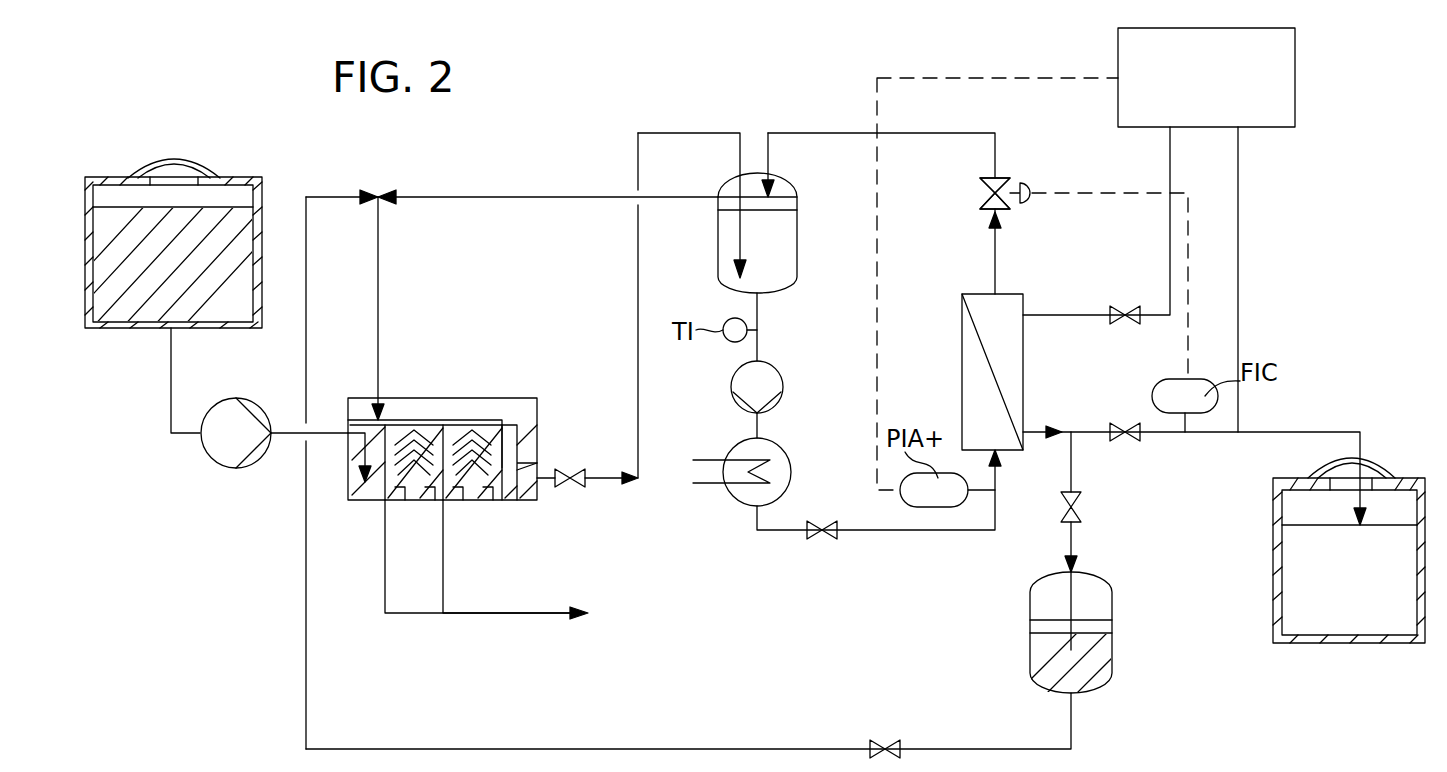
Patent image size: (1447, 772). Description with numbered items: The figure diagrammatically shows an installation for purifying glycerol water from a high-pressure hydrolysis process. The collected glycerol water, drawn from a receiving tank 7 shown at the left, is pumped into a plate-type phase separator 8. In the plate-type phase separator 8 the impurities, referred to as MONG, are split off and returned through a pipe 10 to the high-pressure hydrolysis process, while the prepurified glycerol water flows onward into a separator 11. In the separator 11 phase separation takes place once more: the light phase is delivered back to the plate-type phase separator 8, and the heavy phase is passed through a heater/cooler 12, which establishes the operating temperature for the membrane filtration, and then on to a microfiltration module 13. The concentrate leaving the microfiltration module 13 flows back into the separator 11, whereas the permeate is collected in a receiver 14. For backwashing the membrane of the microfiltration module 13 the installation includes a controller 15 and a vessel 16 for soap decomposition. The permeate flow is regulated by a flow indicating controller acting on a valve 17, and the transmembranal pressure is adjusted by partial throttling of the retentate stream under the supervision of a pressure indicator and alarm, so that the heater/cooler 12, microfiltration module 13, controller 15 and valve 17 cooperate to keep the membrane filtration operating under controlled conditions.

The feed tank 7 is at (230, 246).
The plate-type phase separator 8 is at (372, 500).
The pipe 10 is at (493, 613).
The separator 11 is at (785, 246).
The heater/cooler 12 is at (741, 493).
The microfiltration module 13 is at (988, 310).
The receiver 14 is at (1297, 592).
The controller 15 is at (1268, 105).
The vessel for soap decomposition 16 is at (1050, 597).
The valve 17 is at (1002, 210).